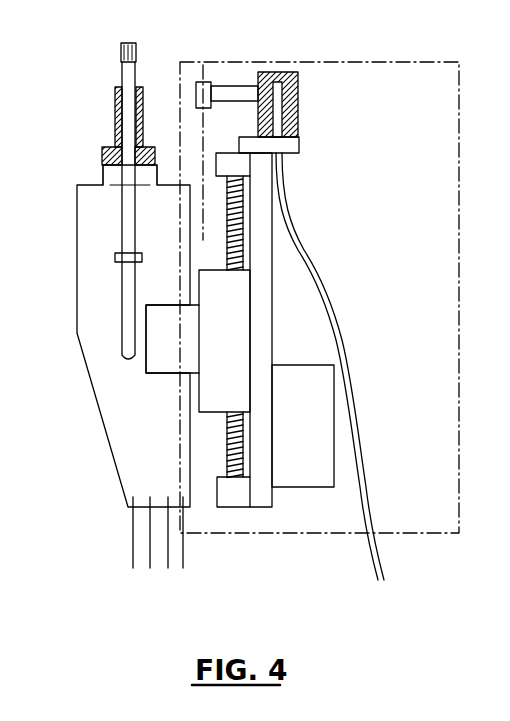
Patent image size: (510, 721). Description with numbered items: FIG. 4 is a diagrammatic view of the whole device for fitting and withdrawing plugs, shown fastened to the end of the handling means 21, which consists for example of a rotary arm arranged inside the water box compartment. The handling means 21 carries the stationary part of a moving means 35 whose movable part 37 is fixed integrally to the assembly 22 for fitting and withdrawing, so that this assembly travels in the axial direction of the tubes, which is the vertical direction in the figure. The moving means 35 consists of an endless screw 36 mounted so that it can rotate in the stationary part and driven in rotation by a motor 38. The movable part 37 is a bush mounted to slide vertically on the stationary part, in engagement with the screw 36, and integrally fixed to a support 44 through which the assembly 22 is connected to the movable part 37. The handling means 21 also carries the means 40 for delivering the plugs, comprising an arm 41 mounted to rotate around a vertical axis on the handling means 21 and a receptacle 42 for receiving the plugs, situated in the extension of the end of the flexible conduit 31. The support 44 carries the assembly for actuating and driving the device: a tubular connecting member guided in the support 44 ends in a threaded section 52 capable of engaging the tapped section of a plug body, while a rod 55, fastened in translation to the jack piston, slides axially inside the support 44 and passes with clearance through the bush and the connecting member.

The handling means 21 is at (435, 497).
The assembly for fitting and withdrawing 22 is at (112, 479).
The flexible conduit 31 is at (300, 247).
The moving means 35 is at (255, 490).
The endless screw 36 is at (227, 448).
The movable part 37 is at (158, 355).
The motor 38 is at (305, 460).
The means for delivering the plugs 40 is at (264, 60).
The arm 41 is at (227, 87).
The receptacle 42 is at (298, 100).
The support 44 is at (128, 430).
The threaded section 52 is at (116, 98).
The rod 55 is at (130, 190).